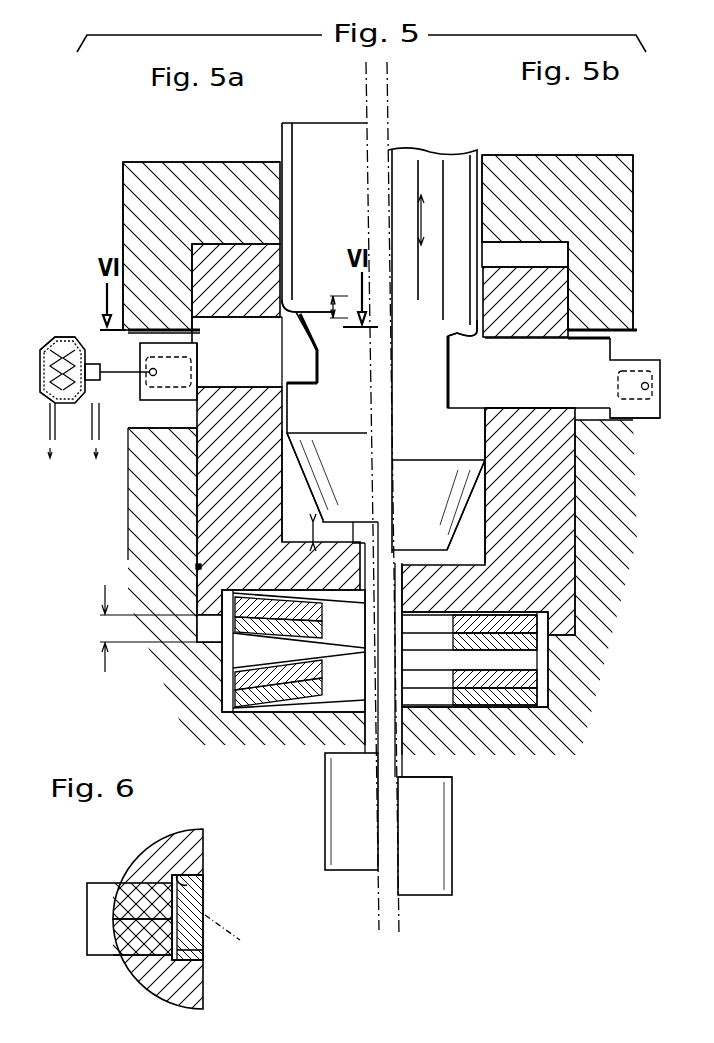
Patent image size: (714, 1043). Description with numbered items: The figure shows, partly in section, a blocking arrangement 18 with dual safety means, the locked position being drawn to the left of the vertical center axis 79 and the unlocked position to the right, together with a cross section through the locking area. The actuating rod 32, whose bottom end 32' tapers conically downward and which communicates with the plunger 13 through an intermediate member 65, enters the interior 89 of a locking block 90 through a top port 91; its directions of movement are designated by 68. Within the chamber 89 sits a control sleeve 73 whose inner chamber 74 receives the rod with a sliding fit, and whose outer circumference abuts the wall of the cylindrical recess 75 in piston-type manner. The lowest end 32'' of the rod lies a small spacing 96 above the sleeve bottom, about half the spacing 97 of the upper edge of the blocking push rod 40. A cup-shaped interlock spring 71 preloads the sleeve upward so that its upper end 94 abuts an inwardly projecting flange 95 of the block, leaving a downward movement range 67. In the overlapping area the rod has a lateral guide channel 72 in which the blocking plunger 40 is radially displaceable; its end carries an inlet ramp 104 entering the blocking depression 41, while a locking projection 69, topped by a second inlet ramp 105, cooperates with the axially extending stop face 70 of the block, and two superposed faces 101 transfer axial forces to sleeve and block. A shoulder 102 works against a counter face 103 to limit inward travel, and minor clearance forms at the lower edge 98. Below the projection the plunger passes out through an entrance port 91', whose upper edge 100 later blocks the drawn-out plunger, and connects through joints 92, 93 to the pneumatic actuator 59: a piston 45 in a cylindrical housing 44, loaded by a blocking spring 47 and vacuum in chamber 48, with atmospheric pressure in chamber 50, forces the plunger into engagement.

In FIG. 5a, the plunger 13 is at (350, 870).
In FIG. 5b, the plunger 13 is at (424, 895).
In FIG. 5a, the blocking mechanism 18 is at (76, 181).
In FIG. 5a, the actuating rod 32 is at (330, 291).
In FIG. 5b, the actuating rod 32 is at (436, 321).
In FIG. 6, the actuating rod 32 is at (220, 917).
In FIG. 5a, the bottom end of actuating rod 32' is at (322, 476).
In FIG. 5b, the bottom end of actuating rod 32' is at (445, 505).
In FIG. 5a, the bottom end of actuating rod 32'' is at (348, 637).
In FIG. 5b, the bottom end of actuating rod 32'' is at (441, 670).
In FIG. 5a, the blocking push rod 40 is at (225, 400).
In FIG. 5b, the blocking push rod 40 is at (535, 410).
In FIG. 6, the blocking push rod 40 is at (145, 985).
In FIG. 5a, the blocking depression 41 is at (318, 310).
In FIG. 5b, the blocking depression 41 is at (455, 335).
In FIG. 6, the blocking depression 41 is at (195, 955).
In FIG. 5a, the cylindrical housing 44 is at (46, 405).
In FIG. 5a, the piston 45 is at (62, 340).
In FIG. 5a, the blocking spring 47 is at (40, 362).
In FIG. 5a, the cylindrical chamber 48 is at (68, 405).
In FIG. 5a, the cylindrical chamber 50 is at (86, 362).
In FIG. 5a, the pneumatic actuator 59 is at (50, 335).
In FIG. 5b, the intermediate member 65 is at (404, 765).
In FIG. 5a, the movement range 67 is at (158, 628).
In FIG. 5b, the directions of movement 68 is at (432, 220).
In FIG. 5a, the locking projection 69 is at (208, 340).
In FIG. 5b, the locking projection 69 is at (605, 355).
In FIG. 6, the locking projection 69 is at (108, 922).
In FIG. 5a, the stop face 70 is at (196, 328).
In FIG. 5b, the stop face 70 is at (580, 288).
In FIG. 6, the stop face 70 is at (128, 958).
In FIG. 5a, the interlock spring 71 is at (288, 700).
In FIG. 5b, the interlock spring 71 is at (522, 700).
In FIG. 5a, the lateral guide channel 72 is at (236, 318).
In FIG. 5b, the lateral guide channel 72 is at (515, 336).
In FIG. 5a, the control sleeve 73 is at (205, 528).
In FIG. 6, the control sleeve 73 is at (142, 868).
In FIG. 5a, the inner chamber 74 is at (292, 484).
In FIG. 5a, the cylindrical recess 75 is at (198, 567).
In FIG. 5a, the axis 79 is at (366, 90).
In FIG. 5b, the axis 79 is at (388, 95).
In FIG. 6, the axis 79 is at (236, 934).
In FIG. 5b, the interior 89 is at (560, 252).
In FIG. 5b, the locking block 90 is at (618, 178).
In FIG. 5b, the top port 91 is at (502, 178).
In FIG. 5a, the entrance port 91' is at (124, 494).
In FIG. 5b, the entrance port 91' is at (522, 587).
In FIG. 5a, the joint 92 is at (128, 354).
In FIG. 5a, the joint 93 is at (150, 374).
In FIG. 5a, the upper end of control sleeve 94 is at (228, 225).
In FIG. 5b, the upper end of control sleeve 94 is at (540, 268).
In FIG. 5a, the inwardly projecting flange 95 is at (262, 190).
In FIG. 5b, the inwardly projecting flange 95 is at (530, 178).
In FIG. 5a, the spacing 96 is at (325, 523).
In FIG. 5a, the spacing 97 is at (343, 296).
In FIG. 5a, the lower edge 98 is at (310, 386).
In FIG. 5b, the lower edge 98 is at (495, 410).
In FIG. 5b, the upper edge of recess 100 is at (590, 330).
In FIG. 5a, the superposed faces 101 is at (268, 387).
In FIG. 5b, the superposed faces 101 is at (555, 392).
In FIG. 5a, the shoulder 102 is at (182, 403).
In FIG. 5b, the shoulder 102 is at (598, 420).
In FIG. 5b, the counter face 103 is at (580, 425).
In FIG. 5a, the inlet ramp 104 is at (318, 360).
In FIG. 5b, the inlet ramp 104 is at (470, 375).
In FIG. 6, the inlet ramp 104 is at (178, 876).
In FIG. 5a, the inlet ramp 105 is at (196, 330).
In FIG. 5b, the inlet ramp 105 is at (600, 338).